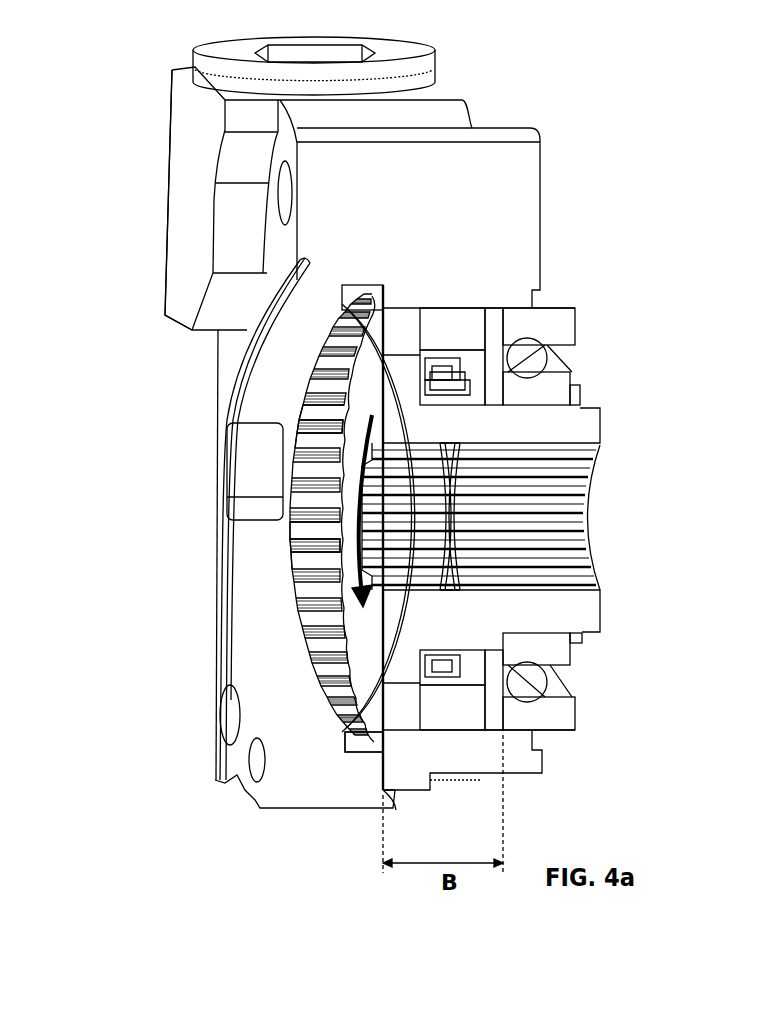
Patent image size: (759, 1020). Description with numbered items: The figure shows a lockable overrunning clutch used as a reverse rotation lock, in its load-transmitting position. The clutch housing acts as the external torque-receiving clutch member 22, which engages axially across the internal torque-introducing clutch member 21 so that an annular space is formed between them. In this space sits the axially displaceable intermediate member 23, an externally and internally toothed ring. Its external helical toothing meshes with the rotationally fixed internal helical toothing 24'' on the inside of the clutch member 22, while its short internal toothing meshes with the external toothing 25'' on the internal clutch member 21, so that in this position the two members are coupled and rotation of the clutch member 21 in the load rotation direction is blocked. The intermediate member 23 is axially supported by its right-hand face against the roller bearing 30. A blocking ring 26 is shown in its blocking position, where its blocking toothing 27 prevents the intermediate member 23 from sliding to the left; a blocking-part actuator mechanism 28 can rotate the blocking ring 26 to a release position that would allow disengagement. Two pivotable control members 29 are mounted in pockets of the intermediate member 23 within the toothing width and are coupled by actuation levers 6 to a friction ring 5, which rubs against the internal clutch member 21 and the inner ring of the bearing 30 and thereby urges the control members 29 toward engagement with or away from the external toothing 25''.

The torque-receiving clutch member 22 is at (353, 423).
The torque-introducing clutch member 21 is at (471, 537).
The actuation lever 6 is at (472, 370).
The control member 29 is at (452, 519).
The friction ring 5 is at (443, 377).
The internal helical toothing 24'' is at (271, 518).
The external toothing 25'' is at (235, 401).
The blocking toothing 27 is at (307, 525).
The intermediate member 23 is at (373, 685).
The blocking ring 26 is at (362, 738).
The blocking-part actuator mechanism 28 is at (165, 170).
The roller bearing 30 is at (600, 720).